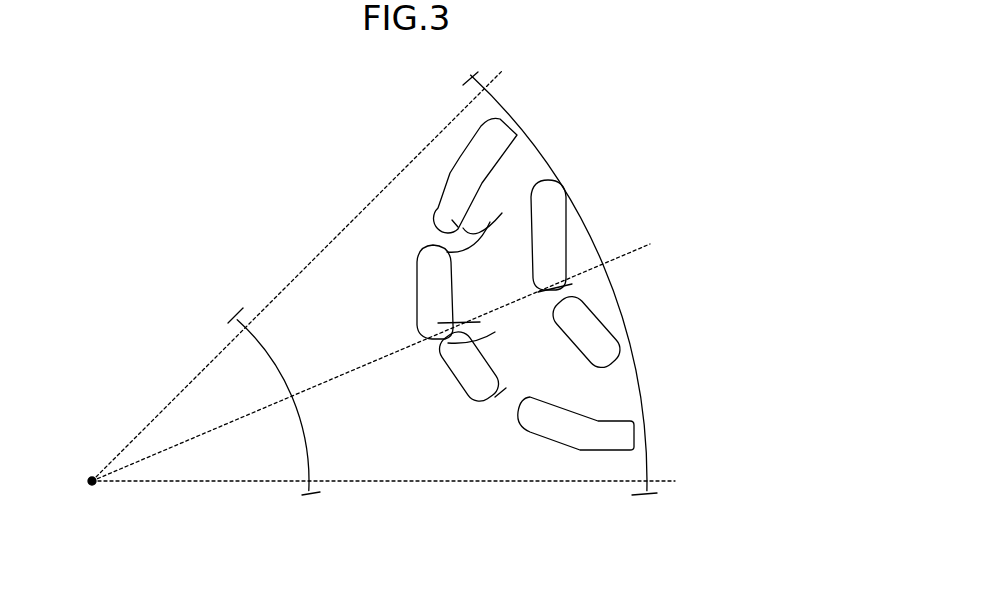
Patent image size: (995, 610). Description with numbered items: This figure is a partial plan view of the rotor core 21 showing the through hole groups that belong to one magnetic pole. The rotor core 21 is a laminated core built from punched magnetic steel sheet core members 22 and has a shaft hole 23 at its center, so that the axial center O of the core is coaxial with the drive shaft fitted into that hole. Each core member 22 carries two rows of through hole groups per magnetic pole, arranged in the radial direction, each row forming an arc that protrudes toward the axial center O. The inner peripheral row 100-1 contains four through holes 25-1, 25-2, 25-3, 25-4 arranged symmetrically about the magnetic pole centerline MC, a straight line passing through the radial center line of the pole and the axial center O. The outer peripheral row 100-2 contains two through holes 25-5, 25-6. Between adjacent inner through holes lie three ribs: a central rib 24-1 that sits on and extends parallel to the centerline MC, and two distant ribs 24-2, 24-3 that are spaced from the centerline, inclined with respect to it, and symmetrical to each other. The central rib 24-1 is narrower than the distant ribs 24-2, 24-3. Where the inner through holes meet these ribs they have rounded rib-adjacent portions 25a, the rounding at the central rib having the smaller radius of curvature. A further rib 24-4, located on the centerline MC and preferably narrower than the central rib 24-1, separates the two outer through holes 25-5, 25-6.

The axial center O is at (93, 485).
The rotor core 21 is at (645, 423).
The core member 22 is at (615, 283).
The shaft hole 23 is at (268, 455).
The magnetic pole centerline MC is at (612, 261).
The inner peripheral row of through hole groups 100-1 is at (436, 180).
The outer peripheral row of through hole groups 100-2 is at (580, 257).
The central rib 24-1 is at (447, 347).
The distant rib 24-2 is at (446, 241).
The distant rib 24-3 is at (510, 405).
The rib 24-4 is at (546, 284).
The through hole 25-1 is at (503, 134).
The through hole 25-2 is at (418, 298).
The through hole 25-3 is at (465, 372).
The through hole 25-4 is at (602, 444).
The through hole 25-5 is at (543, 213).
The through hole 25-6 is at (588, 330).
The rib-adjacent portion 25a is at (520, 390).